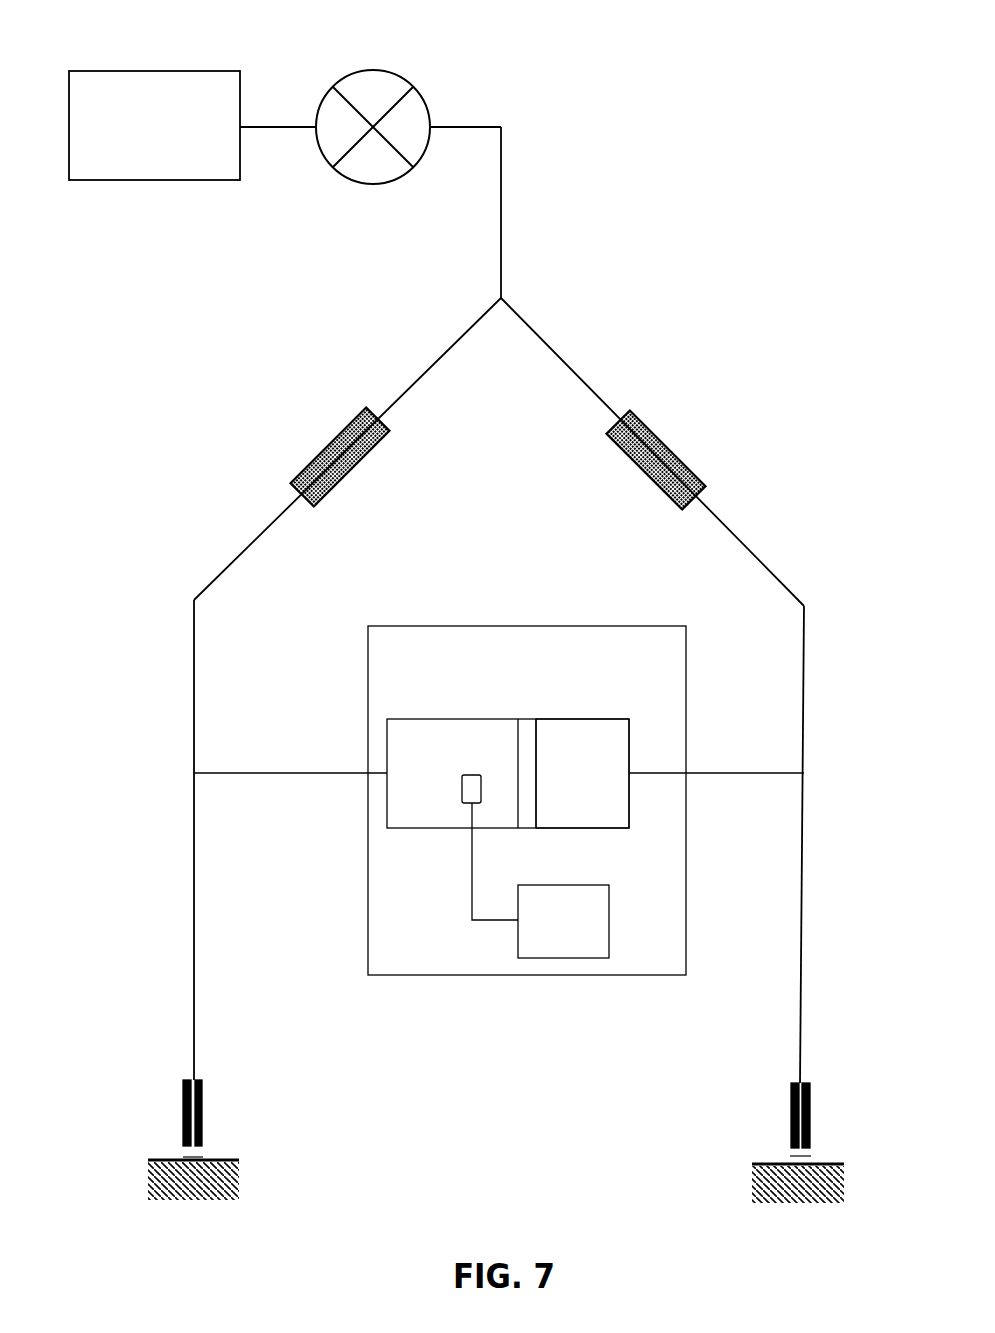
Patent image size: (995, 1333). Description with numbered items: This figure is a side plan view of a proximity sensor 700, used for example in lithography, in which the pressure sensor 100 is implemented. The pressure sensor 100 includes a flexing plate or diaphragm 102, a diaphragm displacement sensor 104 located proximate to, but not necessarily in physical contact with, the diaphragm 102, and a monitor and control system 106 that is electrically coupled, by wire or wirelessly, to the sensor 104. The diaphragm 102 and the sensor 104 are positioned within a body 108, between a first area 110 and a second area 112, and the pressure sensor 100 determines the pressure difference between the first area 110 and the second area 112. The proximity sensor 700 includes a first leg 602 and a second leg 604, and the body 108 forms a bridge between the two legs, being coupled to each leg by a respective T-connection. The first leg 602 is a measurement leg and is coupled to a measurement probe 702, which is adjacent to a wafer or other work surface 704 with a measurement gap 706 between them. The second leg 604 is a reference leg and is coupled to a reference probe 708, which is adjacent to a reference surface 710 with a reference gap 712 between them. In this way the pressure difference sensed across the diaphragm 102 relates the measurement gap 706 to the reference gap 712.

The proximity sensor 700 is at (702, 64).
The pressure sensor 100 is at (514, 626).
The diaphragm 102 is at (527, 718).
The diaphragm displacement sensor 104 is at (462, 793).
The monitor and control system 106 is at (609, 915).
The body 108 is at (225, 773).
The first area 110 is at (415, 732).
The second area 112 is at (583, 732).
The first leg 602 is at (192, 893).
The second leg 604 is at (798, 912).
The measurement probe 702 is at (183, 1093).
The work surface 704 is at (237, 1160).
The measurement gap 706 is at (193, 1157).
The reference probe 708 is at (811, 1103).
The second substrate 710 is at (843, 1163).
The reference gap 712 is at (800, 1156).